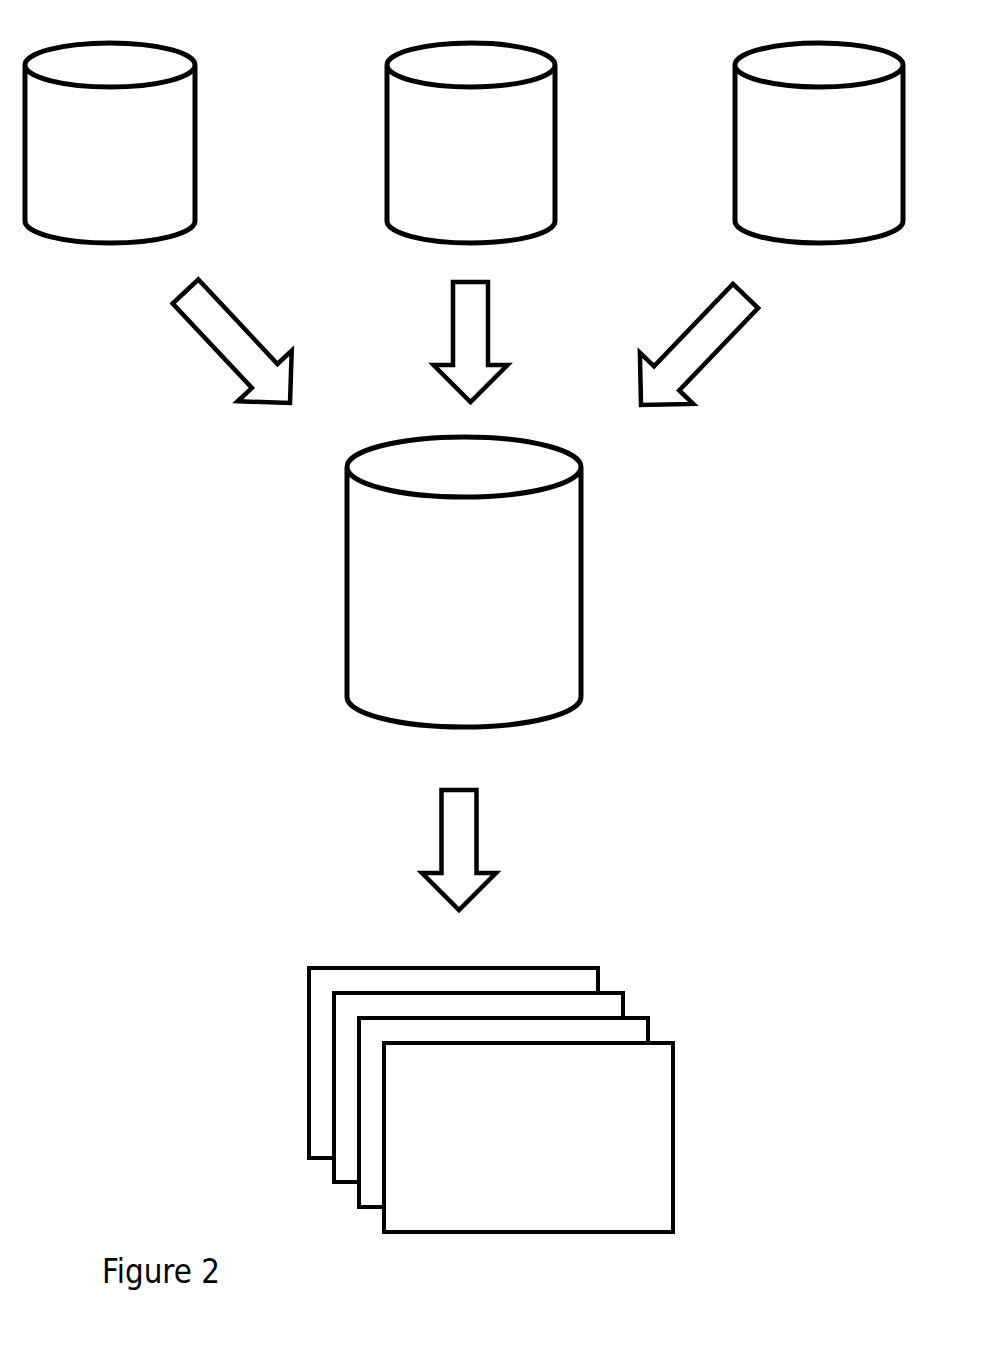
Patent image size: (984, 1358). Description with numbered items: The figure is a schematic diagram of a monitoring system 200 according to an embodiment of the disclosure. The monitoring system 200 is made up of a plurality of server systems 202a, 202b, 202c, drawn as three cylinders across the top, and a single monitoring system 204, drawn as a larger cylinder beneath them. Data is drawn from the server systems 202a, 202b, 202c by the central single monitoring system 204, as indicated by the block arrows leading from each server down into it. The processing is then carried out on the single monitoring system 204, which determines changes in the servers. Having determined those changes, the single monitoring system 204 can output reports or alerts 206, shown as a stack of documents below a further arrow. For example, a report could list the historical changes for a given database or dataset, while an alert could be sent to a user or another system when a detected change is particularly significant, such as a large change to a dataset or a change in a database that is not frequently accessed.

The monitoring system 200 is at (117, 681).
The server system 202a is at (103, 240).
The server system 202b is at (560, 83).
The server system 202c is at (852, 238).
The single monitoring system 204 is at (582, 617).
The reports or alerts 206 is at (692, 989).